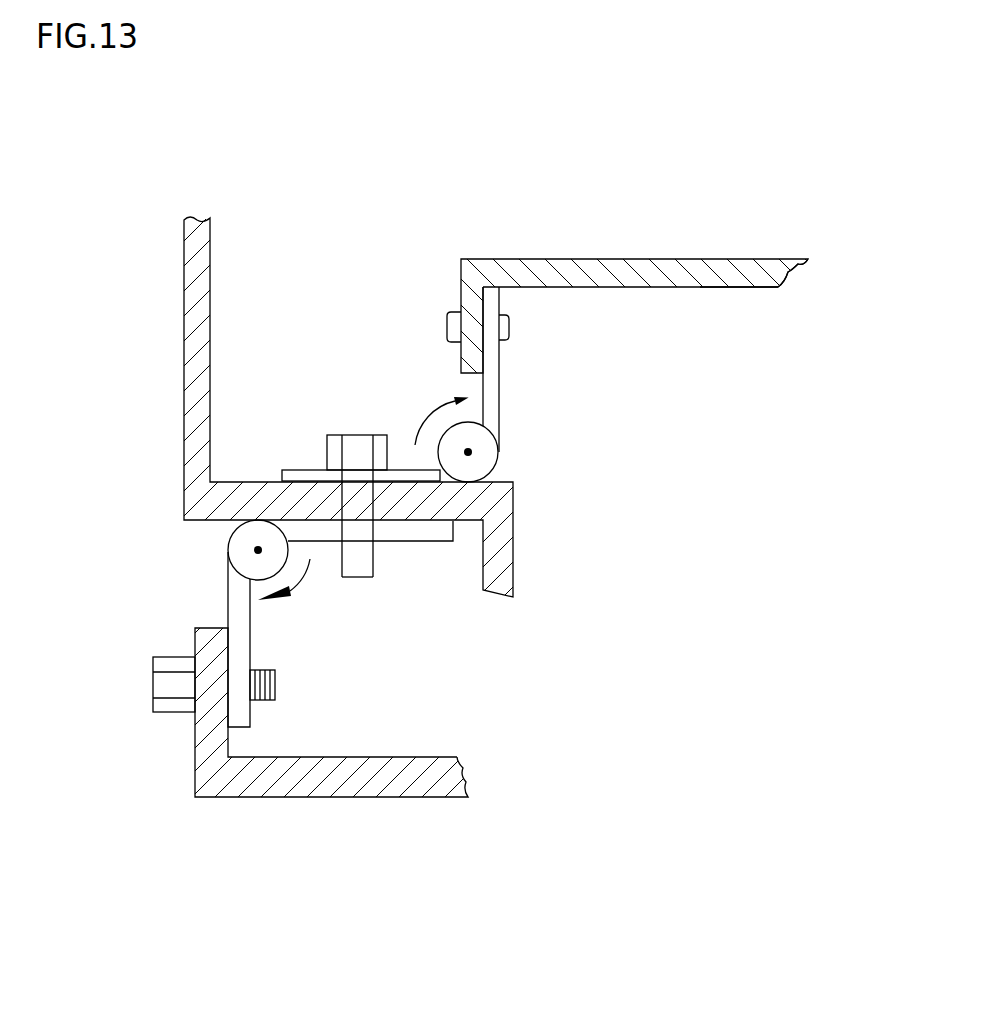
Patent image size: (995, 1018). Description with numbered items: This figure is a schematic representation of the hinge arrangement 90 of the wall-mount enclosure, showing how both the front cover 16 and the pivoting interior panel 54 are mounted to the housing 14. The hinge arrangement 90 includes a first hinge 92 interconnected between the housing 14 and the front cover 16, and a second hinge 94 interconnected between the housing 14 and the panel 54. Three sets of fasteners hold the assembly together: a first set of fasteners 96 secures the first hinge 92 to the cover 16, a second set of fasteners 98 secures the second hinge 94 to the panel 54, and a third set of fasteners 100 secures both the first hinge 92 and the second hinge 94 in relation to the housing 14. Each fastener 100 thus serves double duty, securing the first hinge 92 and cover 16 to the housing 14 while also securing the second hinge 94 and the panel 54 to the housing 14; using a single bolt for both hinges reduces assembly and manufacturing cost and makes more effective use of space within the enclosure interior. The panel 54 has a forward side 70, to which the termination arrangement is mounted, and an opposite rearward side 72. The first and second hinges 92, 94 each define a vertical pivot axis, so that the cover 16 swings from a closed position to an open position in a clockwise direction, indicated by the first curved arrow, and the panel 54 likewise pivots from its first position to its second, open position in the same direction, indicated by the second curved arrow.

The housing 14 is at (170, 470).
The front cover 16 is at (387, 797).
The interior panel 54 is at (650, 258).
The forward side 70 is at (750, 288).
The rearward side 72 is at (797, 258).
The hinge arrangement 90 is at (142, 580).
The first hinge 92 is at (250, 629).
The second hinge 94 is at (499, 413).
The first set of fasteners 96 is at (153, 690).
The second set of fasteners 98 is at (449, 322).
The third set of fasteners 100 is at (353, 433).